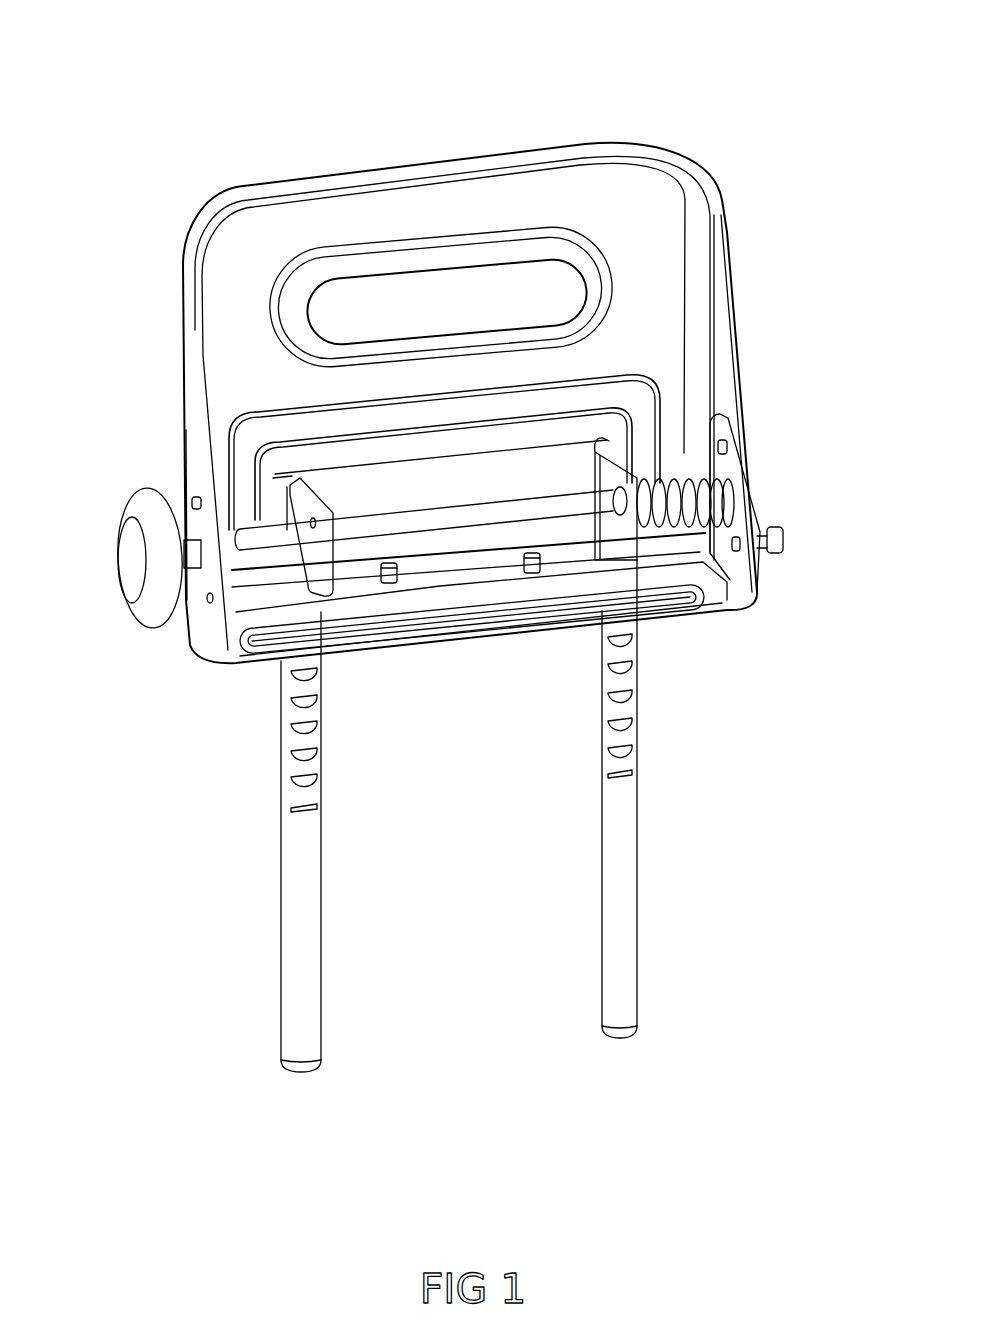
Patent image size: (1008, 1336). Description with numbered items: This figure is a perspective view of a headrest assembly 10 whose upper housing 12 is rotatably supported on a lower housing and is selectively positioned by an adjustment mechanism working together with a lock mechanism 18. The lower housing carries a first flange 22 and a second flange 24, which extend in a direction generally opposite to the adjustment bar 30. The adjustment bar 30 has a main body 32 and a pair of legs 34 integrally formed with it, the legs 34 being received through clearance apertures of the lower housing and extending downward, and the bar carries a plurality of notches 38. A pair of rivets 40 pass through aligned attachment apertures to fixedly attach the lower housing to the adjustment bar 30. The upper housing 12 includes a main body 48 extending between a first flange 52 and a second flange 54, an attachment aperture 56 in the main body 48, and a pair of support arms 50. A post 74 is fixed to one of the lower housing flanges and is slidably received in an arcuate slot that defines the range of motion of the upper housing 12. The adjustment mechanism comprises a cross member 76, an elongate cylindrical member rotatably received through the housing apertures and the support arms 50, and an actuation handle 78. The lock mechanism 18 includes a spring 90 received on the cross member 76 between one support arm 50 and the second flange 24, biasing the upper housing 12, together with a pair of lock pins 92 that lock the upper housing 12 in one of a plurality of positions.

The headrest assembly 10 is at (172, 62).
The upper housing 12 is at (722, 170).
The lock mechanism 18 is at (805, 484).
The first flange 22 is at (198, 594).
The second flange 24 is at (740, 522).
The adjustment bar 30 is at (652, 885).
The main body 32 is at (470, 598).
The legs 34 is at (303, 1003).
The notches 38 is at (300, 730).
The rivets 40 is at (392, 585).
The main body 48 is at (590, 190).
The support arms 50 is at (598, 468).
The first flange 52 is at (192, 441).
The second flange 54 is at (717, 345).
The attachment aperture 56 is at (421, 290).
The post 74 is at (785, 544).
The cross member 76 is at (582, 528).
The actuation handle 78 is at (120, 557).
The spring 90 is at (722, 488).
The lock pins 92 is at (727, 447).